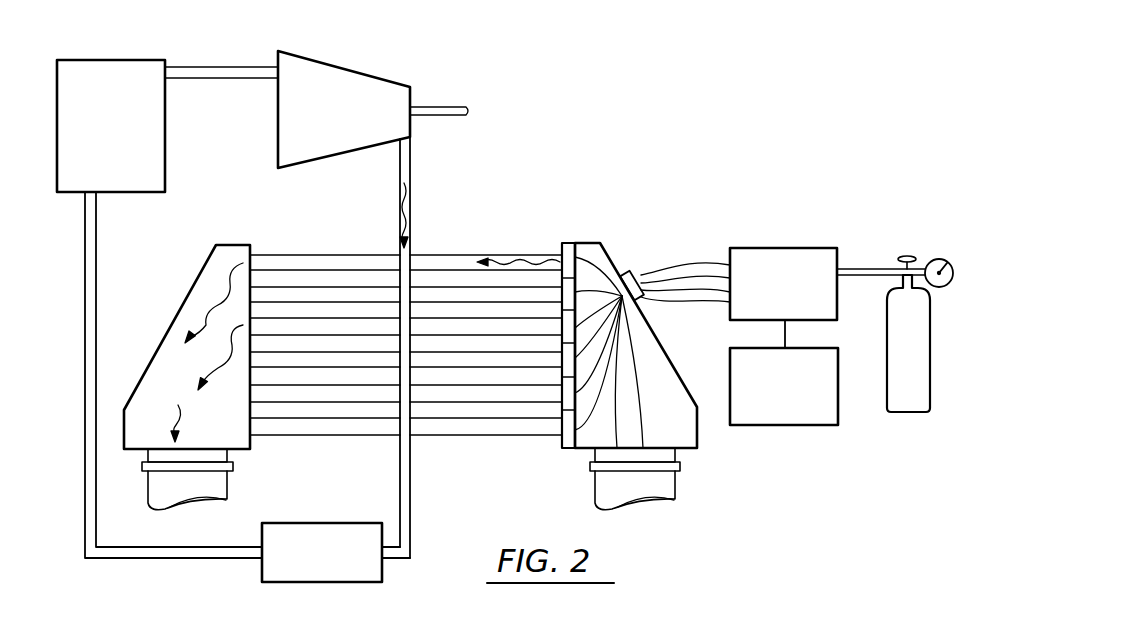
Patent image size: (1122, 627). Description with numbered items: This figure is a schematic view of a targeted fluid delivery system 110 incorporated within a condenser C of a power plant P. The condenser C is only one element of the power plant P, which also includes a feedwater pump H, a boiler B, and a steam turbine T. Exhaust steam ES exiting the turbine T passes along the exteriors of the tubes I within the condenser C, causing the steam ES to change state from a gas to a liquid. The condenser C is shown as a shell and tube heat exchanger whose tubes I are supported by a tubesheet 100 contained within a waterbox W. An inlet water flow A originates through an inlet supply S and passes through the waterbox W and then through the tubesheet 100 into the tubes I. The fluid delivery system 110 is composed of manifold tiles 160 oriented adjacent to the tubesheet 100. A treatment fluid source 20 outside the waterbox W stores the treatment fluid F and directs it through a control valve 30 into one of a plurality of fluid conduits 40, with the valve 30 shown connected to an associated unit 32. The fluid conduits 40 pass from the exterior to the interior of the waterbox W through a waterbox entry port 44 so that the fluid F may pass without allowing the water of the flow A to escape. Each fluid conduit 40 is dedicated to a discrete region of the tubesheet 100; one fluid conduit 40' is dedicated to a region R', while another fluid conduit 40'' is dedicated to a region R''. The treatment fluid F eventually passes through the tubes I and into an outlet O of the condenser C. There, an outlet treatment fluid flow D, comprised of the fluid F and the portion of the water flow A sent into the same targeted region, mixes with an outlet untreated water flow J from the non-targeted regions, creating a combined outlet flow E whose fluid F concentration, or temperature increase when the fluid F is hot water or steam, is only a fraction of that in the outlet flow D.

The boiler B is at (99, 147).
The steam turbine T is at (325, 129).
The power plant P is at (448, 72).
The fluid delivery system 110 is at (718, 156).
The condenser C is at (292, 232).
The exhaust steam ES is at (400, 207).
The feedwater pump H is at (311, 569).
The tubes I is at (437, 436).
The outlet treatment fluid flow D is at (214, 303).
The outlet untreated water flow J is at (220, 357).
The combined outlet flow E is at (186, 423).
The outlet O is at (230, 490).
The treatment fluid F is at (512, 260).
The tubesheet 100 is at (562, 244).
The region R' is at (588, 200).
The waterbox W is at (697, 437).
The waterbox entry port 44 is at (631, 272).
The fluid conduit 40'' is at (646, 352).
The fluid conduit 40' is at (616, 232).
The fluid conduits 40 is at (685, 263).
The inlet water flow A is at (623, 408).
The region R'' is at (541, 457).
The manifold tiles 160 is at (580, 448).
The inlet supply S is at (677, 500).
The control valve 30 is at (768, 299).
The control unit 32 is at (767, 400).
The treatment fluid source 20 is at (896, 366).